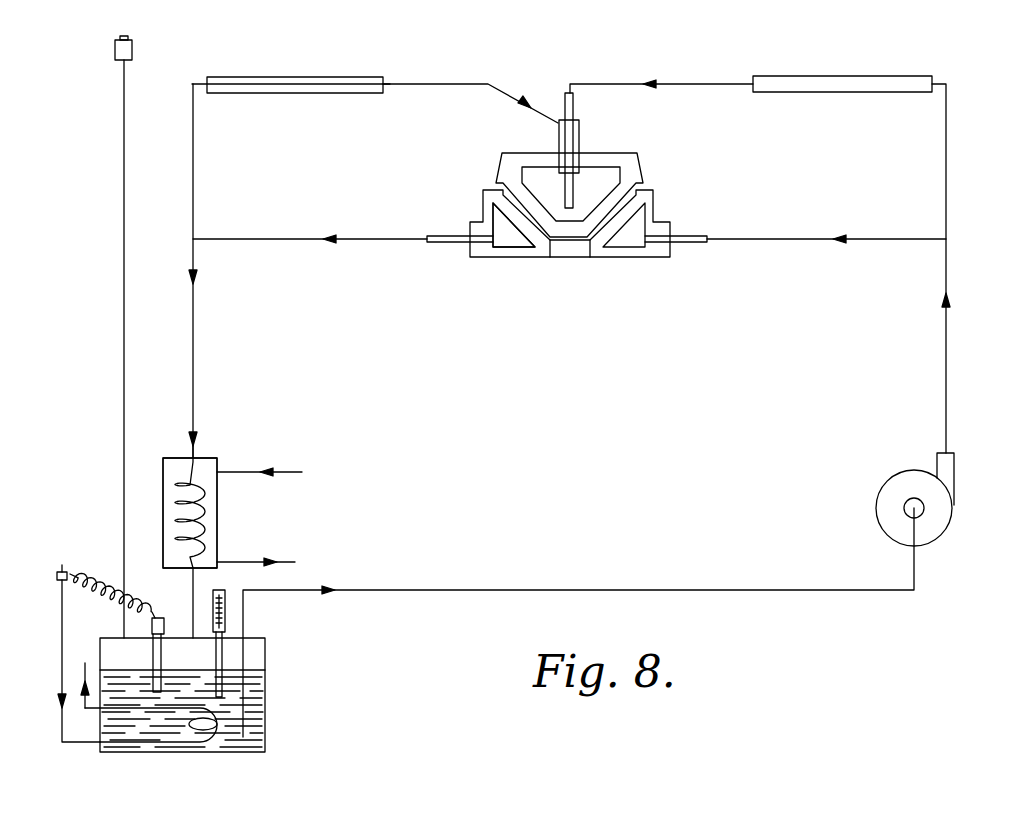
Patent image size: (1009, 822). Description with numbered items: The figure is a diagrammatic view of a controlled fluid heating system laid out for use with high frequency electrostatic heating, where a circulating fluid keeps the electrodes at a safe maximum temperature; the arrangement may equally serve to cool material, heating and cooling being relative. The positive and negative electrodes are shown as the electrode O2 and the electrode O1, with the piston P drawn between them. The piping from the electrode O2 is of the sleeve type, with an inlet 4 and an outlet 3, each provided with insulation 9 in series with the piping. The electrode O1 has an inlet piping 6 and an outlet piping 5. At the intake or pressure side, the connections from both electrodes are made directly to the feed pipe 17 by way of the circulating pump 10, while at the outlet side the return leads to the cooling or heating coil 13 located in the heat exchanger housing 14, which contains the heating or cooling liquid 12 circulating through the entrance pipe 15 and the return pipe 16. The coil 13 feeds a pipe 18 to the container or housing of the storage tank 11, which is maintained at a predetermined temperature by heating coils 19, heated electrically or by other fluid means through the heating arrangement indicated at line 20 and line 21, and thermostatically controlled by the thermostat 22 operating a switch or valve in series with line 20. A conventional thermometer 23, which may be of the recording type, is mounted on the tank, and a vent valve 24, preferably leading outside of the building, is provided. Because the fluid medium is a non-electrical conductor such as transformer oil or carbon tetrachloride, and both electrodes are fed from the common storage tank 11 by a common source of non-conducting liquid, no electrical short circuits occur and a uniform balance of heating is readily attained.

The outlet 3 is at (433, 82).
The inlet 4 is at (691, 80).
The outlet piping 5 is at (367, 234).
The inlet piping 6 is at (773, 233).
The insulation 9 is at (270, 85).
The circulating pump 10 is at (947, 498).
The storage tank 11 is at (257, 703).
The heating or cooling liquid 12 is at (210, 523).
The cooling or heating coil 13 is at (198, 480).
The heat exchanger housing 14 is at (175, 465).
The entrance pipe 15 is at (283, 477).
The return pipe 16 is at (283, 563).
The feed pipe 17 is at (362, 593).
The pipe 18 is at (195, 578).
The heating coils 19 is at (200, 726).
The heating arrangement line 20 is at (63, 560).
The heating arrangement 21 is at (85, 663).
The thermostat 22 is at (150, 620).
The thermometer 23 is at (222, 590).
The vent valve 24 is at (133, 45).
The piston P is at (518, 208).
The electrode O1 is at (633, 252).
The electrode O2 is at (633, 165).